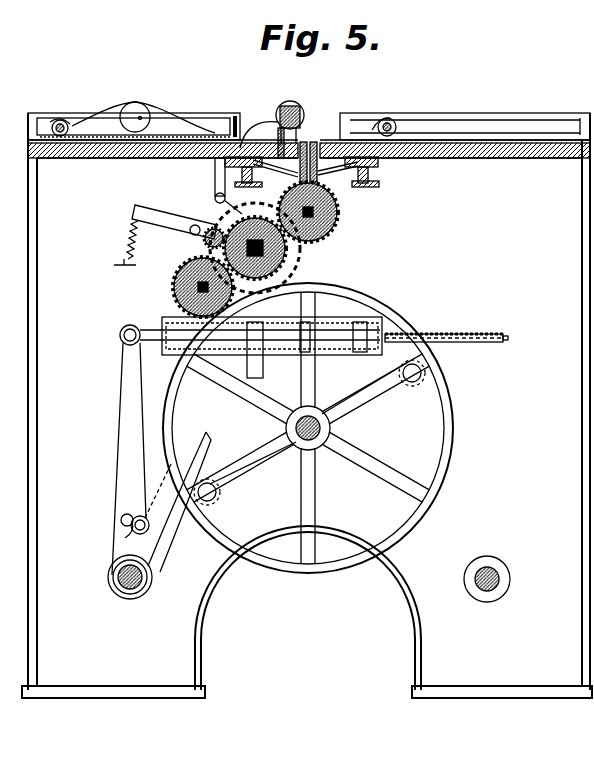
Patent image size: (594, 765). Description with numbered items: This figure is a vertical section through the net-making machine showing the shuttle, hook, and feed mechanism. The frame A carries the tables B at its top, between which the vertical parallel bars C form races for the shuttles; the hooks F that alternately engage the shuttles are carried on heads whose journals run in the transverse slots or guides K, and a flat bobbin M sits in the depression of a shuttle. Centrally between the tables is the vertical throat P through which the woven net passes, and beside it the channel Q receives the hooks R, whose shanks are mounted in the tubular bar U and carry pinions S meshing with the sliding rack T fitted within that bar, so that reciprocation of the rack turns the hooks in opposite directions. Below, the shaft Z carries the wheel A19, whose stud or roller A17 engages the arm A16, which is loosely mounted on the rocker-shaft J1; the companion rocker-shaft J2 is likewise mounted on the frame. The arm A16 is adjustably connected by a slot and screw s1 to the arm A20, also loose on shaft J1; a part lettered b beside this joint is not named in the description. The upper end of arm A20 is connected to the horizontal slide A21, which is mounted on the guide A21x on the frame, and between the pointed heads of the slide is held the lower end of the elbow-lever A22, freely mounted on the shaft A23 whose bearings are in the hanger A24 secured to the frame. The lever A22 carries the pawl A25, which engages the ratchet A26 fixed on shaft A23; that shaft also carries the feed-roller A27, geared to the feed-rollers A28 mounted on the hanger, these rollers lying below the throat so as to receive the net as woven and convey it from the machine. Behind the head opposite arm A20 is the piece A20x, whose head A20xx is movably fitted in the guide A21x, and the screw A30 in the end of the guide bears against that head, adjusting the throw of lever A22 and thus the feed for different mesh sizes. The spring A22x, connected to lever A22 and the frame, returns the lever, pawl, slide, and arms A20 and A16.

The frame A is at (307, 405).
The tables B is at (152, 160).
The parallel separated bars C is at (45, 142).
The slots or guides K is at (200, 127).
The bobbin M is at (135, 104).
The hooks F is at (66, 122).
The pinions S is at (276, 118).
The tubular bar U is at (291, 101).
The sliding rack T is at (300, 112).
The hooks R is at (305, 142).
The vertical throat P is at (314, 146).
The space or channel Q is at (338, 143).
The pawl A25 is at (214, 208).
The elbow-lever A22 is at (152, 212).
The spring A22x is at (127, 243).
The feed-roller A27 is at (205, 256).
The hanger A24 is at (340, 215).
The ratchet A26 is at (288, 280).
The shaft A23 is at (300, 258).
The feed-rollers A28 is at (168, 306).
The horizontal slide A21 is at (240, 347).
The guide A21x is at (352, 312).
The piece A20x is at (330, 343).
The head A20xx is at (360, 352).
The screw A30 is at (470, 336).
The wheel A19 is at (447, 480).
The shaft Z is at (332, 428).
The stud or roller A17 is at (218, 492).
The arm A20 is at (108, 468).
The pin b is at (124, 521).
The screw s1 is at (123, 533).
The rocker-shaft J1 is at (120, 582).
The arm A16 is at (182, 524).
The rocker-shaft J2 is at (502, 582).